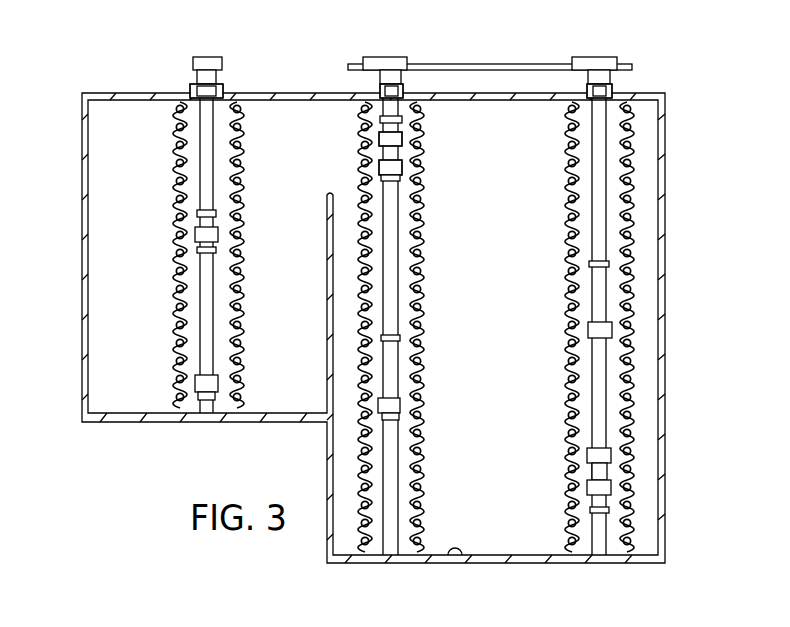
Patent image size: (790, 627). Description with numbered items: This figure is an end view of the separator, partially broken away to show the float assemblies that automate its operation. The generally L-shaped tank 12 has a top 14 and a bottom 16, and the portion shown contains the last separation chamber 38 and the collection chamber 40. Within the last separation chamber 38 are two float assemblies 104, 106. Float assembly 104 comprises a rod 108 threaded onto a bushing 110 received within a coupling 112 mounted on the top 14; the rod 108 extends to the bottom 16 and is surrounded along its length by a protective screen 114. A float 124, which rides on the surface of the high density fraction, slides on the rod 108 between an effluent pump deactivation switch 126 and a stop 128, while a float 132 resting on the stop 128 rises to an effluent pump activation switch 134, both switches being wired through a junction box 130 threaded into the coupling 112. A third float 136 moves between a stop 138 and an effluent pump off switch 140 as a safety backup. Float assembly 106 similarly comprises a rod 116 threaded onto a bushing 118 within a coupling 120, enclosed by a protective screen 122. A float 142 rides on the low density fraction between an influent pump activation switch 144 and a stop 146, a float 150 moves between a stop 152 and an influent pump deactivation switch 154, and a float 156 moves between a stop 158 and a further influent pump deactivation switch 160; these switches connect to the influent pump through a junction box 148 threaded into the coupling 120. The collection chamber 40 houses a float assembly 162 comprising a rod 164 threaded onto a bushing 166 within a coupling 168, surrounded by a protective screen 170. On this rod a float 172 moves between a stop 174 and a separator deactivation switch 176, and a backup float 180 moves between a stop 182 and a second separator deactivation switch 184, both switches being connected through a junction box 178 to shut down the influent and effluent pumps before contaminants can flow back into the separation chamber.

The tank 12 is at (662, 180).
The top 14 is at (292, 93).
The bottom 16 is at (455, 556).
The last separation chamber 38 is at (653, 280).
The collection chamber 40 is at (86, 268).
The float assembly 104 is at (557, 316).
The float assembly 106 is at (425, 313).
The rod 108 is at (592, 220).
The bushing 110 is at (588, 90).
The coupling 112 is at (612, 90).
The protective screen 114 is at (568, 161).
The rod 116 is at (398, 225).
The bushing 118 is at (380, 90).
The coupling 120 is at (403, 90).
The protective screen 122 is at (420, 268).
The float 124 is at (587, 452).
The effluent pump deactivation switch 126 is at (592, 470).
The stop 128 is at (575, 338).
The junction box 130 is at (600, 57).
The float 132 is at (588, 330).
The effluent pump activation switch 134 is at (590, 264).
The third float 136 is at (611, 487).
The stop 138 is at (587, 485).
The effluent pump off switch 140 is at (590, 510).
The float 142 is at (400, 402).
The influent pump activation switch 144 is at (399, 420).
The stop 146 is at (400, 338).
The junction box 148 is at (393, 57).
The float 150 is at (379, 167).
The stop 152 is at (400, 178).
The influent pump deactivation switch 154 is at (402, 167).
The float 156 is at (402, 139).
The stop 158 is at (379, 140).
The influent pump deactivation switch 160 is at (380, 119).
The float assembly 162 is at (166, 243).
The rod 164 is at (213, 182).
The bushing 166 is at (192, 88).
The coupling 168 is at (220, 88).
The protective screen 170 is at (175, 161).
The float 172 is at (218, 380).
The stop 174 is at (216, 396).
The separator deactivation switch 176 is at (214, 258).
The junction box 178 is at (197, 57).
The float 180 is at (195, 231).
The stop 182 is at (216, 250).
The separator deactivation switch 184 is at (216, 213).